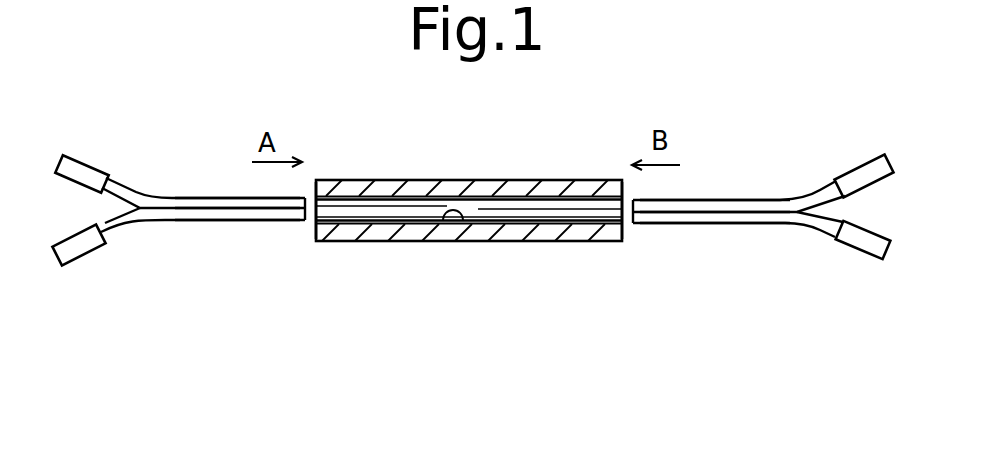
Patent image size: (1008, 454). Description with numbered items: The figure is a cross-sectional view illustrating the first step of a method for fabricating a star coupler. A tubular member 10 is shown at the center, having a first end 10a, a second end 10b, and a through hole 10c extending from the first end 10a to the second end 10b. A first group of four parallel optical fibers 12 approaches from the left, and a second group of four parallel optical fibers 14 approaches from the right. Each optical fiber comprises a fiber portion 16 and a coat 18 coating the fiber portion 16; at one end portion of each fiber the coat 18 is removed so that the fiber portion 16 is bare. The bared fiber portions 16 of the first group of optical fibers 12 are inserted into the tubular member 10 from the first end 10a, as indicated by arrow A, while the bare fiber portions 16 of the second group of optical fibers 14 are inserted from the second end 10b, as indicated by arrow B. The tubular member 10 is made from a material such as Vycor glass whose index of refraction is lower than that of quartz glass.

The tubular member 10 is at (445, 180).
The first end 10a is at (312, 242).
The second end 10b is at (630, 243).
The through hole 10c is at (462, 220).
The first group of parallel optical fibers 12 is at (117, 212).
The second group of parallel optical fibers 14 is at (770, 207).
The fiber portion 16 is at (198, 197).
The coat 18 is at (87, 172).